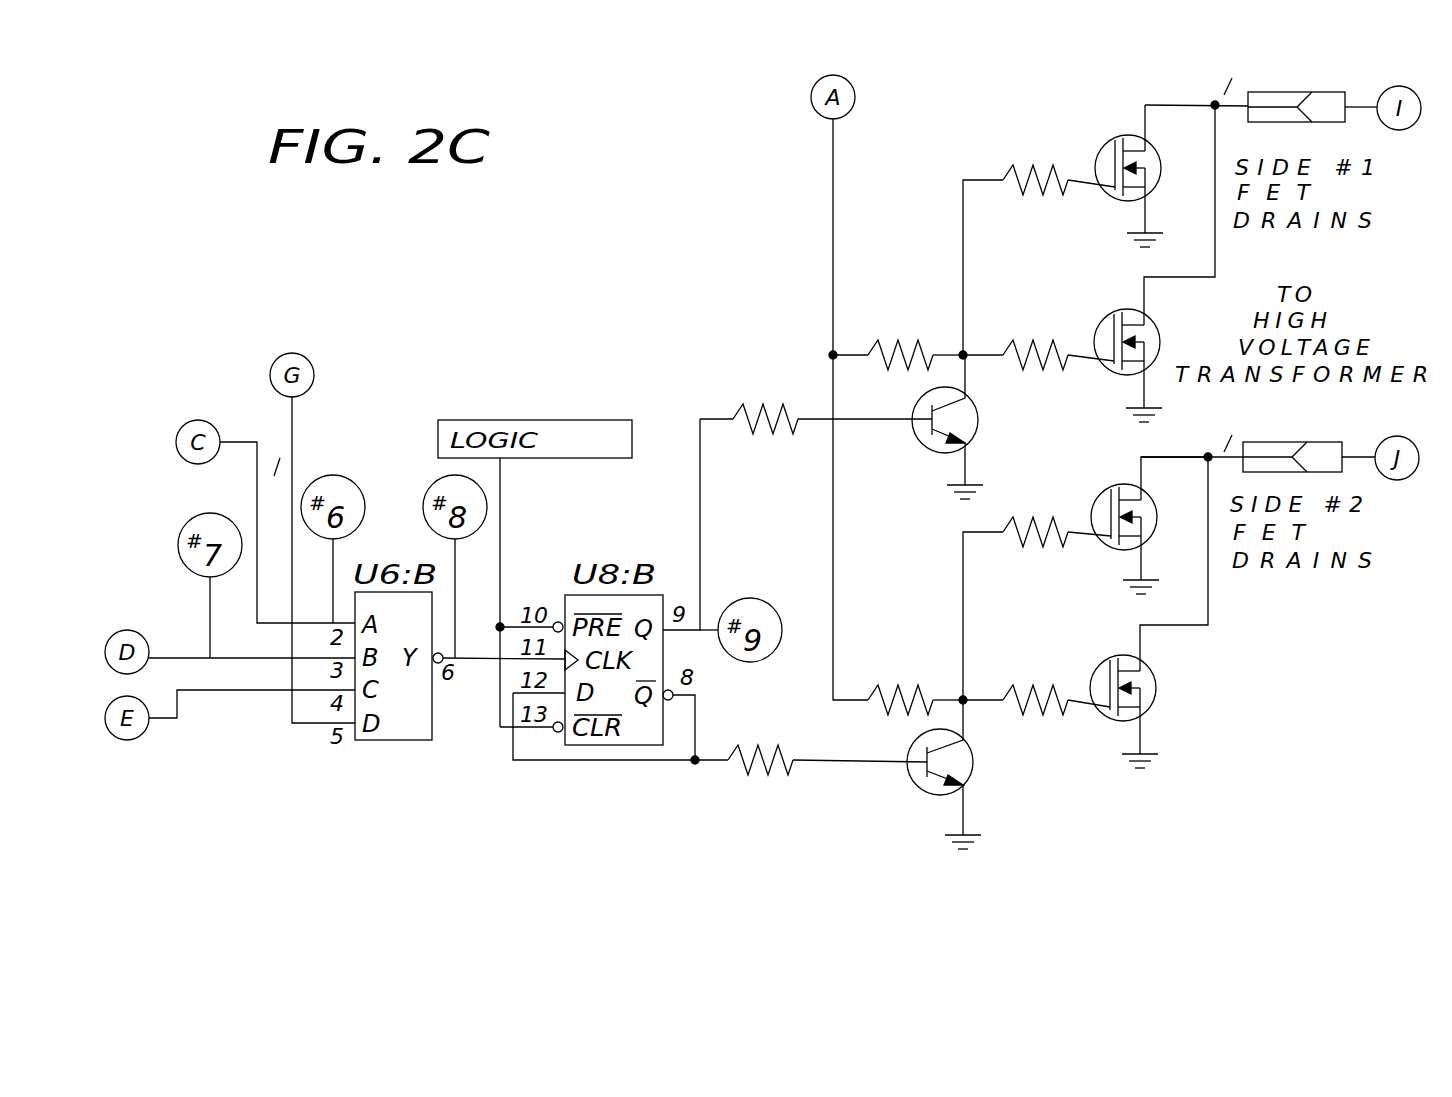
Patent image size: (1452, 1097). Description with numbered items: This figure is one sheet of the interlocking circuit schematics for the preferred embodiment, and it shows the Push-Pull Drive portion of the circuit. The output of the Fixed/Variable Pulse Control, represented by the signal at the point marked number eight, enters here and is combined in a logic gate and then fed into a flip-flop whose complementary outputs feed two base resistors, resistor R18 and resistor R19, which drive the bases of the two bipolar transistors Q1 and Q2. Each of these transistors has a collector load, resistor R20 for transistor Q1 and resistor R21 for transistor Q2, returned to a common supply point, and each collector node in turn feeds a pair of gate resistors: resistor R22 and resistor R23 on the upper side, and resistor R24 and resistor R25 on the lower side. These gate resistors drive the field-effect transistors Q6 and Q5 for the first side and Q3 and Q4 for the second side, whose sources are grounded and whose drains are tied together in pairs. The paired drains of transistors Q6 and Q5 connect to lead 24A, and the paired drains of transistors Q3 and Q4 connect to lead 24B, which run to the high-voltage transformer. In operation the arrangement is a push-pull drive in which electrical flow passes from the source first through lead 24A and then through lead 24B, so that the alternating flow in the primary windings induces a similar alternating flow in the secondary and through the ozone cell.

The lead 24A is at (1393, 87).
The lead 24B is at (1383, 436).
The transistor Q1 is at (920, 440).
The transistor Q2 is at (917, 787).
The transistor Q3 is at (1120, 532).
The transistor Q4 is at (1116, 620).
The transistor Q5 is at (1122, 271).
The transistor Q6 is at (1099, 185).
The resistor R18 is at (816, 403).
The resistor R19 is at (811, 746).
The resistor R20 is at (898, 341).
The resistor R21 is at (908, 686).
The resistor R22 is at (1039, 246).
The resistor R23 is at (1038, 341).
The resistor R24 is at (1037, 592).
The resistor R25 is at (1036, 687).